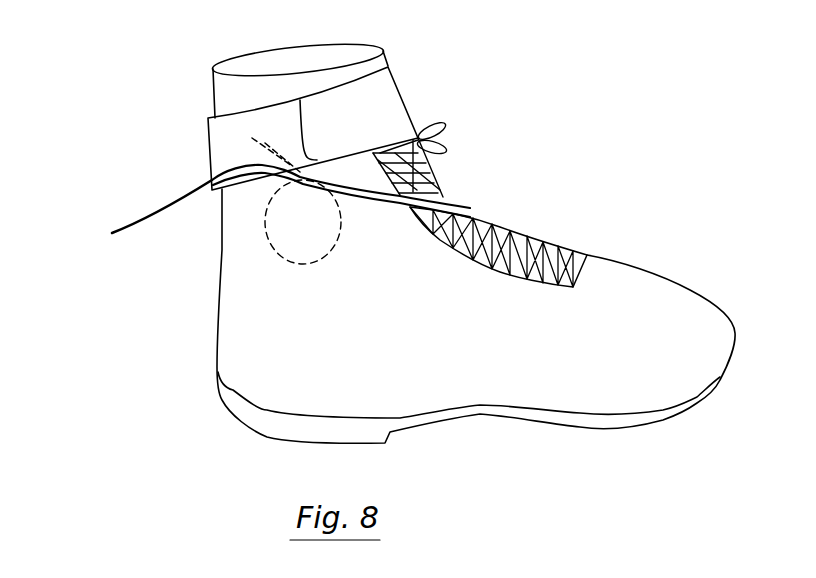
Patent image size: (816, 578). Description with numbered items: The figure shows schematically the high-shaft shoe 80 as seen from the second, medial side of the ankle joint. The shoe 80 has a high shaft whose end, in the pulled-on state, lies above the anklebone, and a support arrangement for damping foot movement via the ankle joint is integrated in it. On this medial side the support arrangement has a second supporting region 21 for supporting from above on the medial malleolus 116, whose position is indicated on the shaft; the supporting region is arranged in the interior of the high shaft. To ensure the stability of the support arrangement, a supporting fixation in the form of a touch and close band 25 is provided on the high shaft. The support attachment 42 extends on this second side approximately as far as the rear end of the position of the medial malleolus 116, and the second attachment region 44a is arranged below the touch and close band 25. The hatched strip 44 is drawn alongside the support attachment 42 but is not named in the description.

The high-shaft shoe 80 is at (686, 79).
The touch and close band 25 is at (398, 84).
The second supporting region 21 is at (261, 209).
The second attachment region 44a is at (257, 138).
The support attachment 42 is at (472, 145).
The tensioning strip (hatched) 44 is at (447, 207).
The medial malleolus 116 is at (265, 218).